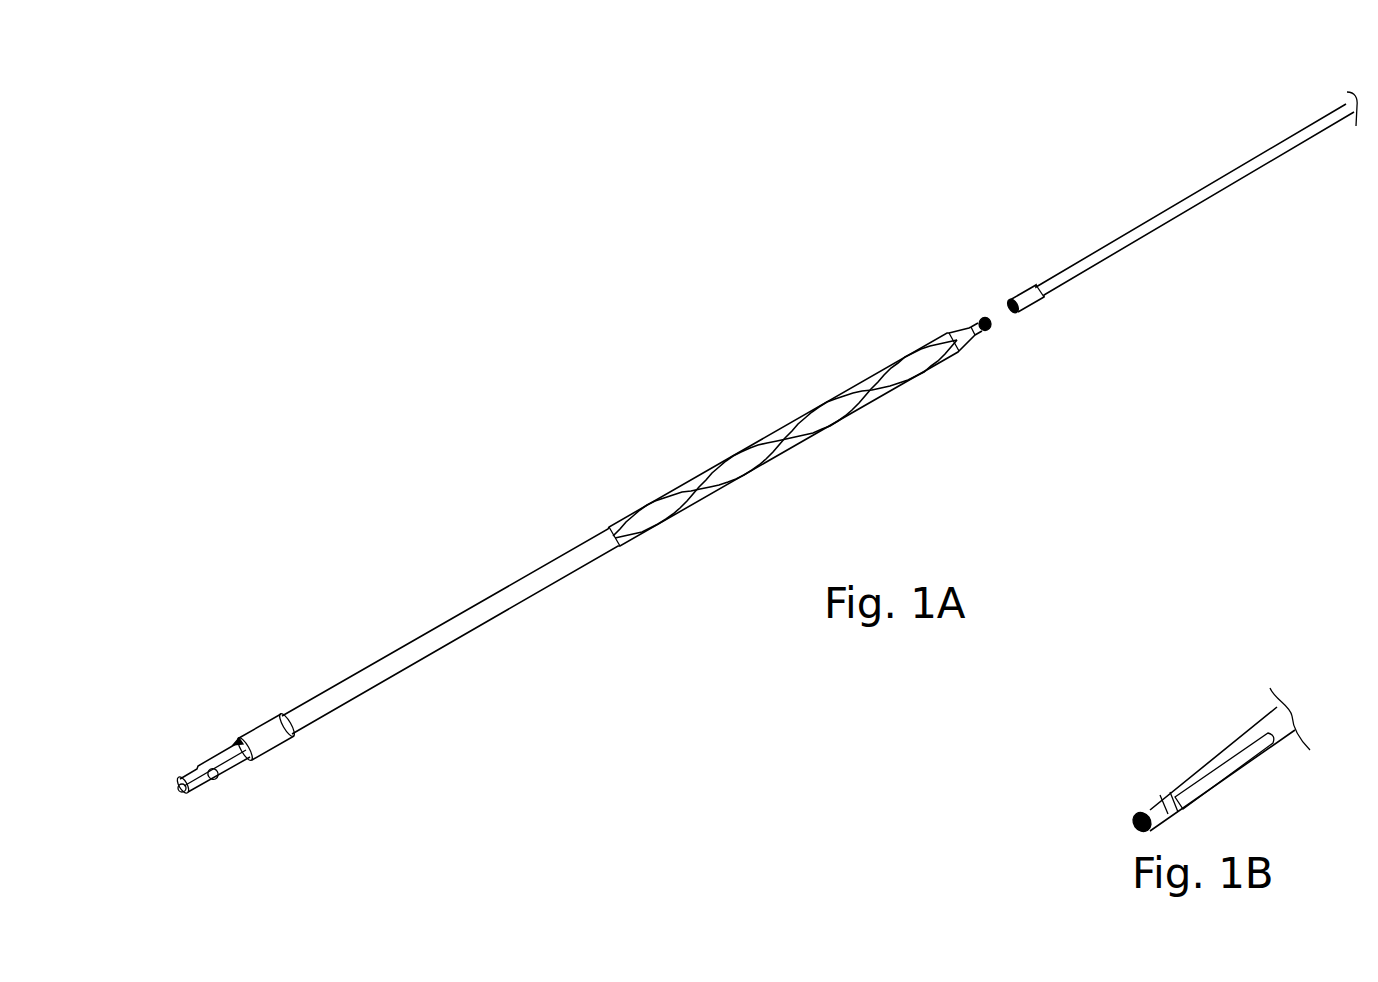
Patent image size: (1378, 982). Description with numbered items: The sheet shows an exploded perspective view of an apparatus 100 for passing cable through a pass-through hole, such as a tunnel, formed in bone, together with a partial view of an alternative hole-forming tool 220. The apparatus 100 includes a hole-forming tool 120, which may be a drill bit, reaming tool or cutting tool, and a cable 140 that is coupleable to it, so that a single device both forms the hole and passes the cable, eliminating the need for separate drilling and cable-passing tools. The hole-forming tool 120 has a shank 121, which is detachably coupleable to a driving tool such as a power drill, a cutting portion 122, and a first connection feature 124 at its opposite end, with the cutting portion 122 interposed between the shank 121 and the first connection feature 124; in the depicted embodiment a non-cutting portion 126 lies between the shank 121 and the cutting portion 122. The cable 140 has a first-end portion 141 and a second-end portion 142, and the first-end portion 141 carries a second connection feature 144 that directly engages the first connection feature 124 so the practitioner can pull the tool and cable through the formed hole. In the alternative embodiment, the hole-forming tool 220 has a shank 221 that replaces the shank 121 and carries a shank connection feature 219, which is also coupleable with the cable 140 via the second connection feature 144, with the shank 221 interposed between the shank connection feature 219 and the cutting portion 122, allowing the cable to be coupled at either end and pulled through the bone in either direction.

In FIG. 1A, the apparatus 100 is at (494, 108).
In FIG. 1A, the hole-forming tool 120 is at (714, 372).
In FIG. 1A, the shank 121 is at (224, 748).
In FIG. 1A, the cutting portion 122 is at (978, 366).
In FIG. 1A, the first connection feature 124 is at (970, 322).
In FIG. 1A, the non-cutting portion 126 is at (637, 578).
In FIG. 1A, the cable 140 is at (1213, 262).
In FIG. 1A, the first-end portion 141 is at (1056, 303).
In FIG. 1A, the second-end portion 142 is at (1347, 142).
In FIG. 1A, the second connection feature 144 is at (1022, 302).
In FIG. 1B, the hole-forming tool 220 is at (1143, 690).
In FIG. 1B, the shank 221 is at (1222, 757).
In FIG. 1B, the shank connection feature 219 is at (1132, 814).